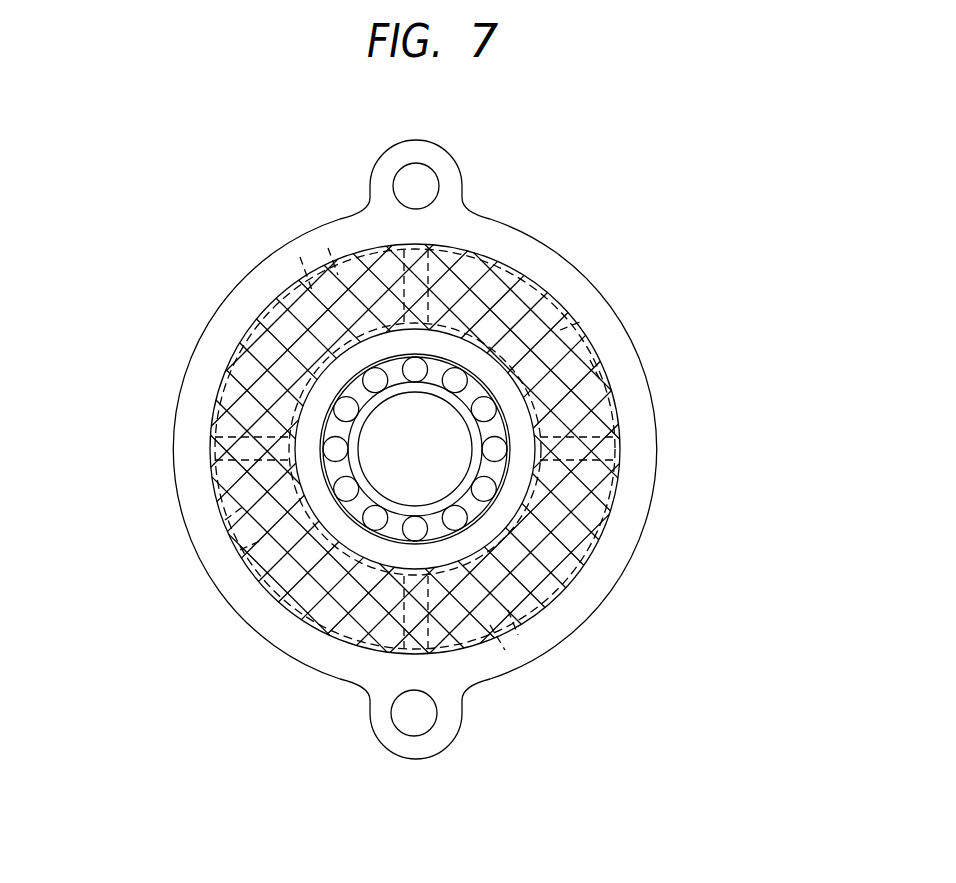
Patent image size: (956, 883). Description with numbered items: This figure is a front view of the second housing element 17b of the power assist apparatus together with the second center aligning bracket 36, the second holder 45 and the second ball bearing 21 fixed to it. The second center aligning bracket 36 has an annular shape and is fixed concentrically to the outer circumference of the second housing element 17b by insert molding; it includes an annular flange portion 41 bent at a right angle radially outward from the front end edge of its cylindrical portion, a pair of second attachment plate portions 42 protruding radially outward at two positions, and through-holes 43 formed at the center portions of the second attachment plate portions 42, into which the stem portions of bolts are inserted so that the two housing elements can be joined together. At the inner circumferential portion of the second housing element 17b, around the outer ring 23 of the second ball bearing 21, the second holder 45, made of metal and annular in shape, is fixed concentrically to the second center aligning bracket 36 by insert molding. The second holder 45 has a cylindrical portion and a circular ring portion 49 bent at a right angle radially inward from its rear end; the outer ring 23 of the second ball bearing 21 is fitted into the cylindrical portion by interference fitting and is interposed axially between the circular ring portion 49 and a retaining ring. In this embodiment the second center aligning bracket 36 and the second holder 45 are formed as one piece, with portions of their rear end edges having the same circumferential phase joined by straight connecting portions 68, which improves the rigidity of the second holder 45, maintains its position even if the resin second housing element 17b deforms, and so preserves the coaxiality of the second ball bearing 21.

The second housing element 17b is at (508, 302).
The second ball bearing 21 is at (483, 488).
The outer ring 23 is at (504, 467).
The second center aligning bracket 36 is at (628, 407).
The flange portion 41 is at (592, 310).
The second attachment plate portions 42 is at (388, 168).
The through-holes 43 is at (432, 200).
The second holder 45 is at (322, 393).
The circular ring portion 49 is at (315, 418).
The connecting portions 68 is at (333, 255).